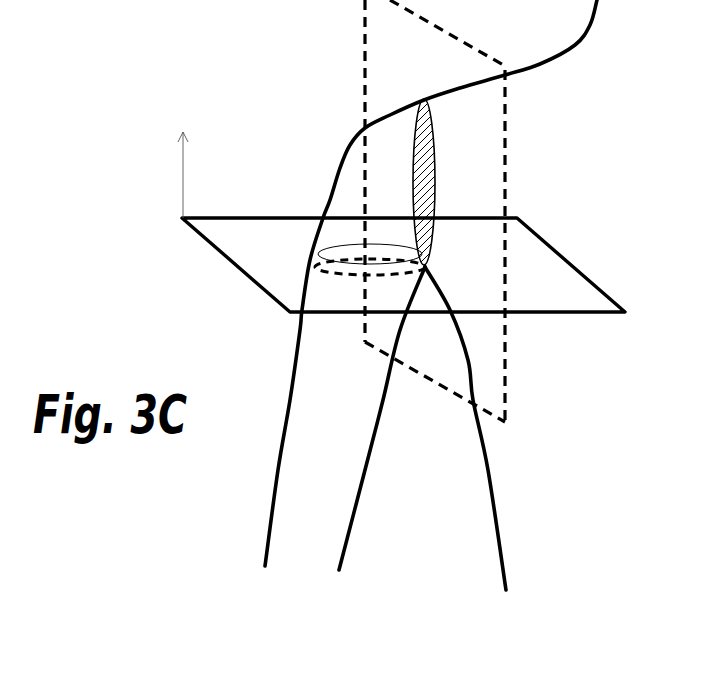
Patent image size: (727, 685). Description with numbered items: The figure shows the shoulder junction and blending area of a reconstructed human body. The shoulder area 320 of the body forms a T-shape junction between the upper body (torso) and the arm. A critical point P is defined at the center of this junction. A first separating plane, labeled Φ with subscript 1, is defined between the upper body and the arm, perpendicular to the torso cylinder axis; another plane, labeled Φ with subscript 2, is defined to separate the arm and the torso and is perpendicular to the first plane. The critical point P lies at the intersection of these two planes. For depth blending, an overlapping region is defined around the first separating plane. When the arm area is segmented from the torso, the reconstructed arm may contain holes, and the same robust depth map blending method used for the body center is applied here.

The shoulder area 320 is at (243, 56).
The horizontal plane Φ 1 is at (391, 222).
The vertical plane Φ 2 is at (416, 212).